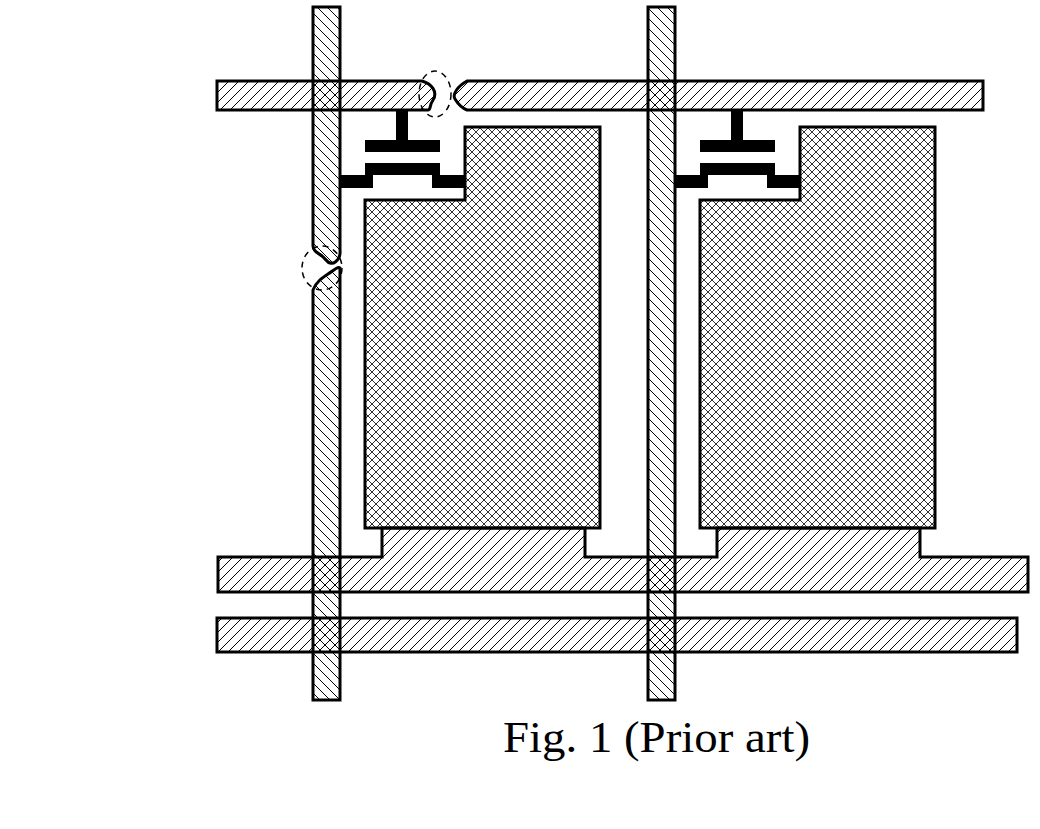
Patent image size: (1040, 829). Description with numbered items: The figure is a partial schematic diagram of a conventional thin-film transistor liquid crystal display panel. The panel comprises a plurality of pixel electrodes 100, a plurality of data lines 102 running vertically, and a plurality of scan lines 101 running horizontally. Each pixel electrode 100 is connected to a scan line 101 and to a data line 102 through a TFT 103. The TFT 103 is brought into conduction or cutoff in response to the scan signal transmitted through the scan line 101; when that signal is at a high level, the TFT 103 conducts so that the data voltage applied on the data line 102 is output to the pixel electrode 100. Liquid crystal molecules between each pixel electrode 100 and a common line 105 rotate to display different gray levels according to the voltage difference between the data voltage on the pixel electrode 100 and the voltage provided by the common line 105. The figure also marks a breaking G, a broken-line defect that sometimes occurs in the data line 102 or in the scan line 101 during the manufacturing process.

The pixel electrode 100 is at (405, 307).
The scan line 101 is at (233, 100).
The data line 102 is at (313, 200).
The TFT 103 is at (397, 173).
The common line 105 is at (437, 557).
The breaking G is at (440, 72).